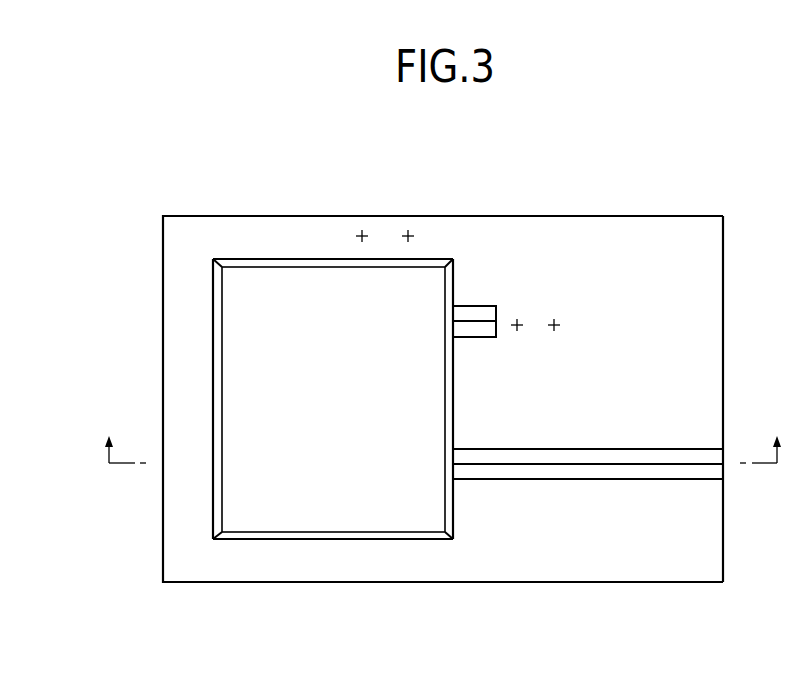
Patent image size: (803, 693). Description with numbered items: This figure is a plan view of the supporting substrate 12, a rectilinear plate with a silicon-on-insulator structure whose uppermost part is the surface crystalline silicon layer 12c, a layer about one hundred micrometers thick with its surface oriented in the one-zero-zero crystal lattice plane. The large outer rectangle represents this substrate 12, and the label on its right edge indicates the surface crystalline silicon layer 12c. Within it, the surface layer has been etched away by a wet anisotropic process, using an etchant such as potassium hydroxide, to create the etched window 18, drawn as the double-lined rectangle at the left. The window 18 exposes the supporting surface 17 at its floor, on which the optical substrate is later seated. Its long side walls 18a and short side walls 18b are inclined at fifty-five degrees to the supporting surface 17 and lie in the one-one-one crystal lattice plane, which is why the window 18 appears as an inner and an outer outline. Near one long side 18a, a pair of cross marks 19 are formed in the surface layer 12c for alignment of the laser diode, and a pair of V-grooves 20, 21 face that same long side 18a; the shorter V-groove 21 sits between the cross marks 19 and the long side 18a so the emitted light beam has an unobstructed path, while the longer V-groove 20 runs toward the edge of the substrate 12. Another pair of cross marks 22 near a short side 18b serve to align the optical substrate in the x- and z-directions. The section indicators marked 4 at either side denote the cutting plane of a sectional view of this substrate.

The supporting substrate 12 is at (471, 362).
The crystalline silicon layer 12c is at (710, 322).
The supporting surface 17 is at (325, 515).
The etched window 18 is at (284, 448).
The side wall (long side) 18a is at (222, 355).
The side wall (short side) 18b is at (304, 262).
The cross marks 19 is at (554, 320).
The V-groove 20 is at (560, 477).
The V-groove 21 is at (472, 335).
The cross marks 22 is at (410, 232).
The section line 4- 4 is at (442, 433).